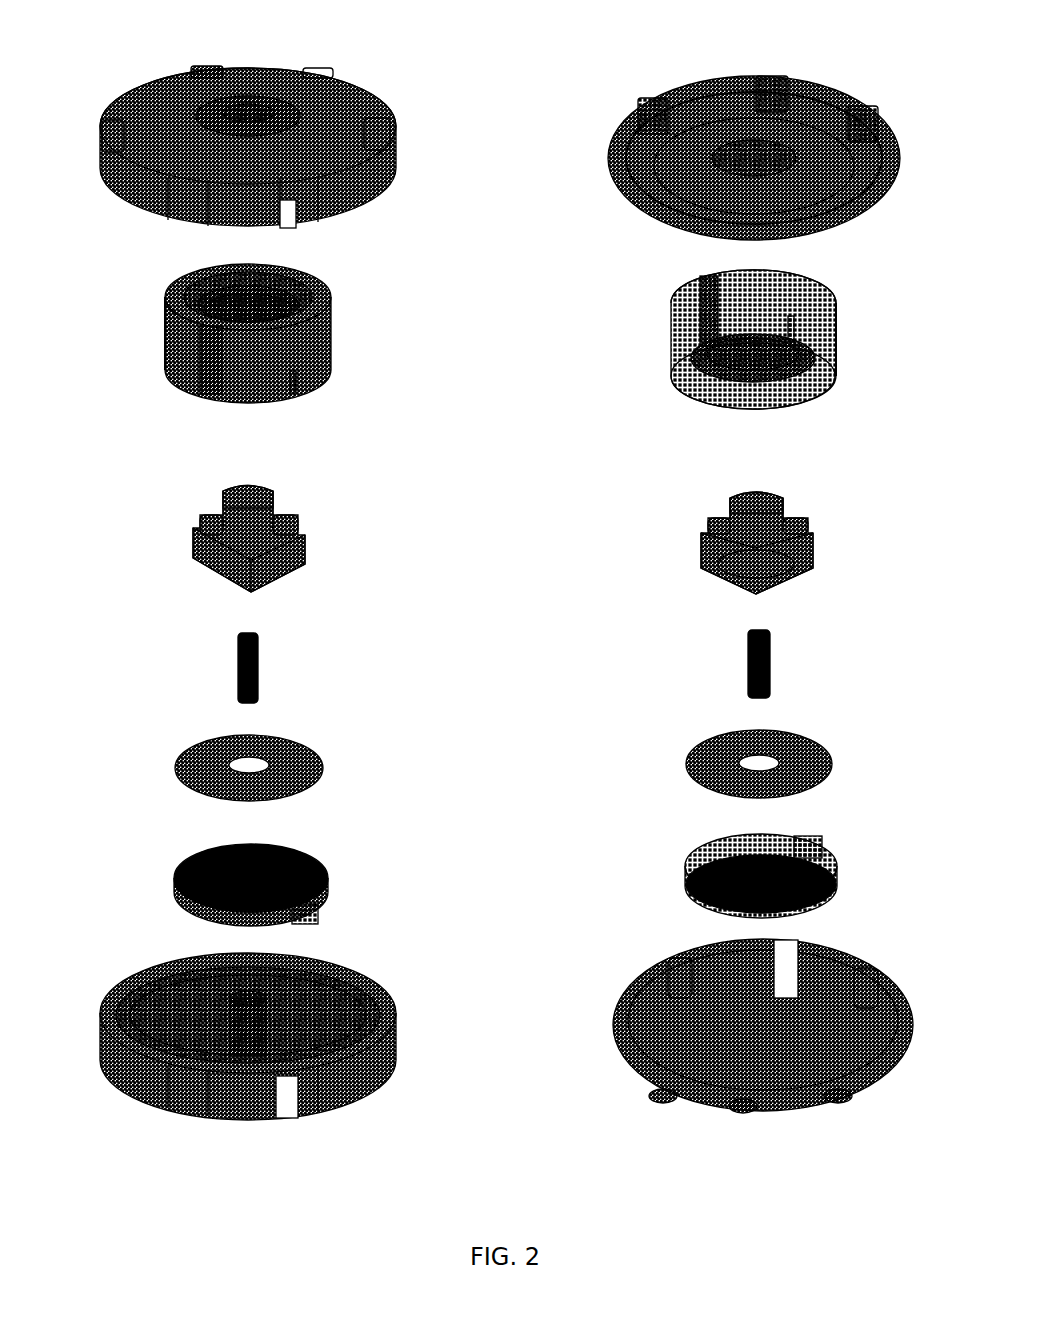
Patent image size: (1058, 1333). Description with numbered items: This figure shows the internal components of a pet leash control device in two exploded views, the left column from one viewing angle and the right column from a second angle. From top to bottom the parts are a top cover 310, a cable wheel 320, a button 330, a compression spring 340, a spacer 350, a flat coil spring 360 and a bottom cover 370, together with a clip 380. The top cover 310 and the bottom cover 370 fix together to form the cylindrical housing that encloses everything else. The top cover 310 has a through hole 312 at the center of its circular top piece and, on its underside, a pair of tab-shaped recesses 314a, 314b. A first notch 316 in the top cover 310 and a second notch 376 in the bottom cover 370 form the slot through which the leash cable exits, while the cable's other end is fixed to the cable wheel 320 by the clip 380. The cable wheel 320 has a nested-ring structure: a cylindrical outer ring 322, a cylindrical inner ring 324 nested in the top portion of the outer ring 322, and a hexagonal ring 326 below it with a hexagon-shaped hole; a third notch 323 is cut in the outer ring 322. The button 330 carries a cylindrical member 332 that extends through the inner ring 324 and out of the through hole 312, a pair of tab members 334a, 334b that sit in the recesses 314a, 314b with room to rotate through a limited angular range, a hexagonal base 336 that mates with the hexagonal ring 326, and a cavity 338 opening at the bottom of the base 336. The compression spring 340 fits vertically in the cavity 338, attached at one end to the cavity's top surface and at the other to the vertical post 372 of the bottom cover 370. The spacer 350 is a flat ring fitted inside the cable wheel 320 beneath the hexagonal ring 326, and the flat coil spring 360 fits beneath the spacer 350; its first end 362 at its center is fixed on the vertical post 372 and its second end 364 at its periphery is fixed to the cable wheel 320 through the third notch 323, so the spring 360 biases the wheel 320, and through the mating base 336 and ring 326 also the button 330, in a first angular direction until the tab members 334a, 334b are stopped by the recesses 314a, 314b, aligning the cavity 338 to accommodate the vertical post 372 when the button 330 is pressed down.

The top cover 310 is at (522, 144).
The through hole 312 is at (185, 68).
The tab-shaped recess 314a is at (625, 170).
The tab-shaped recess 314b is at (858, 204).
The first notch 316 is at (292, 214).
The cable wheel 320 is at (503, 337).
The cylindrical outer ring 322 is at (195, 300).
The third notch 323 is at (303, 387).
The cylindrical inner ring 324 is at (198, 270).
The hexagonal ring 326 is at (762, 348).
The button 330 is at (484, 528).
The cylindrical member 332 is at (212, 490).
The tab member 334a is at (190, 515).
The tab member 334b is at (290, 515).
The hexagonal base 336 is at (190, 568).
The cavity 338 is at (796, 576).
The compression spring 340 is at (258, 660).
The spacer 350 is at (320, 760).
The flat coil spring 360 is at (504, 864).
The first end 362 is at (212, 842).
The second end 364 is at (312, 904).
The bottom cover 370 is at (489, 1029).
The vertical post 372 is at (172, 955).
The second notch 376 is at (298, 1100).
The clip 380 is at (198, 372).